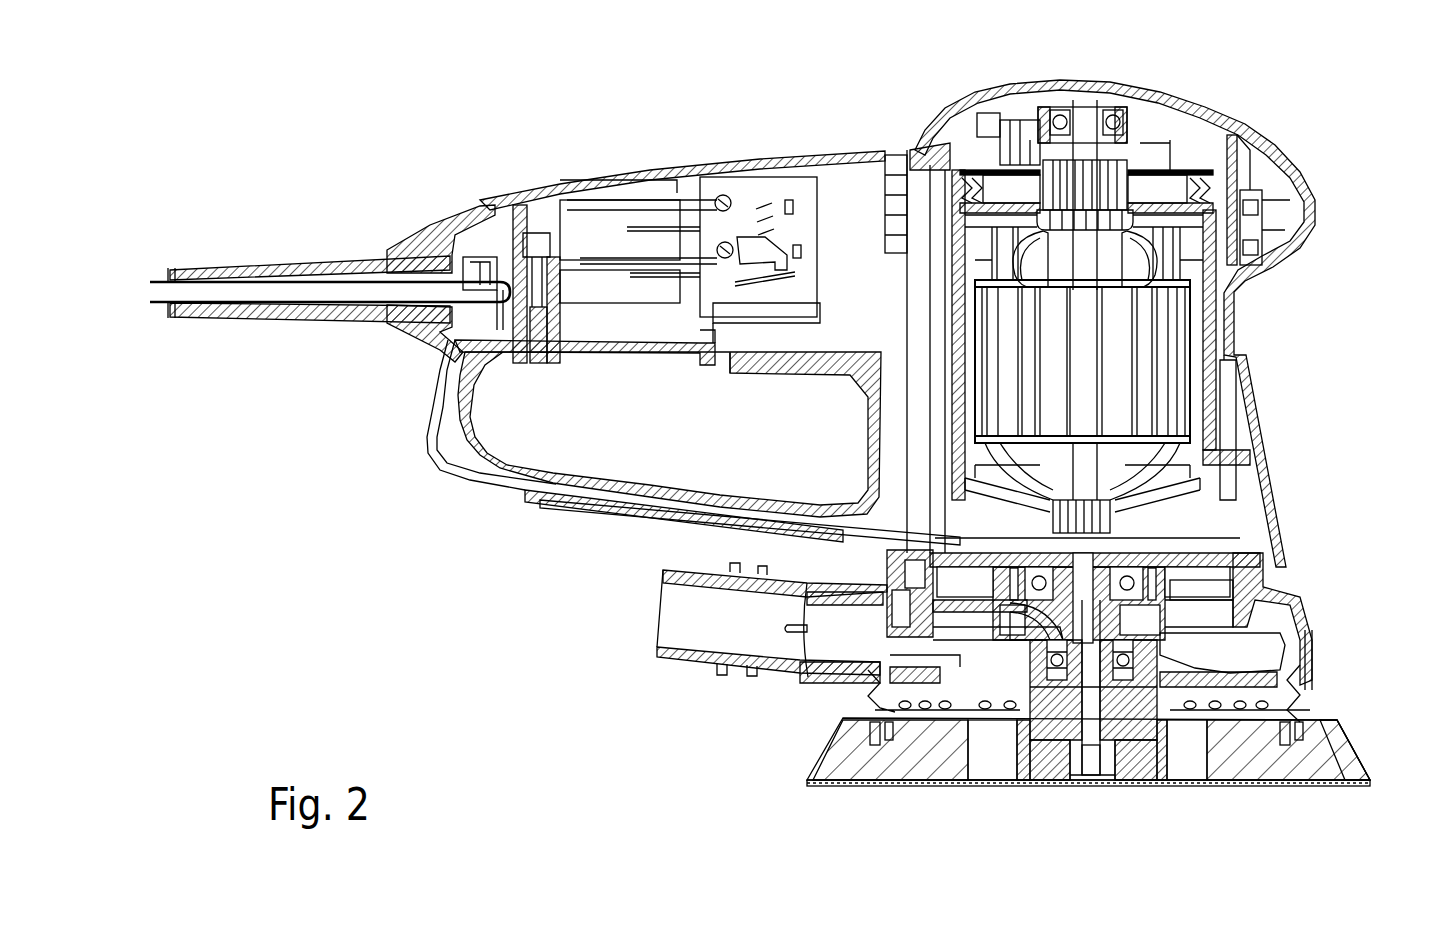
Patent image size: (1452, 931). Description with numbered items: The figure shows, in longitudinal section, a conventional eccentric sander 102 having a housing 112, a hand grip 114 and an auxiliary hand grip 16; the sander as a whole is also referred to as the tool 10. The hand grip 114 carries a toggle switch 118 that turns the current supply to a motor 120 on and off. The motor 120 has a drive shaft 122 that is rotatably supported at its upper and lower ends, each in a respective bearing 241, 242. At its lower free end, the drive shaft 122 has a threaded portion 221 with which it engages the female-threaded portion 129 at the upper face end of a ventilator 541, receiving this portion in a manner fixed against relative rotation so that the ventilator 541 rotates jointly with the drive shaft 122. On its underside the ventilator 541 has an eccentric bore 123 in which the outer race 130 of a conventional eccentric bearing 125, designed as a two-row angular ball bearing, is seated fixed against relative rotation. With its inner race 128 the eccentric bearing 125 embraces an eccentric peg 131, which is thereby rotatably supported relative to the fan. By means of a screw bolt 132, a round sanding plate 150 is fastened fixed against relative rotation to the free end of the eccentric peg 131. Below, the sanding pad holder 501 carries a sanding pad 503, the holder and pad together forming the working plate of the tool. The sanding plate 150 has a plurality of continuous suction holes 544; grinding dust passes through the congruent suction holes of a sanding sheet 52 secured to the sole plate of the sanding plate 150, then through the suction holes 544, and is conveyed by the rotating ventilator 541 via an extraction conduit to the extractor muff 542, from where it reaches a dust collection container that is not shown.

The random orbit sander 10 is at (1215, 100).
The auxiliary hand grip 16 is at (1322, 220).
The sanding sheet 52 is at (838, 780).
The eccentric sander 102 is at (1228, 125).
The housing 112 is at (900, 148).
The hand grip 114 is at (770, 152).
The toggle switch 118 is at (827, 357).
The motor 120 is at (1053, 337).
The drive shaft 122 is at (1153, 543).
The eccentric bore 123 is at (1060, 633).
The eccentric bearing 125 is at (1050, 740).
The inner race 128 is at (1150, 740).
The female-threaded portion 129 is at (1063, 615).
The outer race 130 is at (1015, 745).
The eccentric peg 131 is at (1112, 745).
The screw bolt 132 is at (1085, 760).
The sanding plate 150 is at (1353, 730).
The threaded portion 221 is at (1190, 593).
The bearing 241 is at (1113, 107).
The bearing 242 is at (1223, 550).
The sanding pad holder 501 is at (1287, 720).
The sanding pad 503 is at (1322, 755).
The ventilator 541 is at (1235, 650).
The extractor muff 542 is at (665, 565).
The suction holes 544 is at (985, 762).